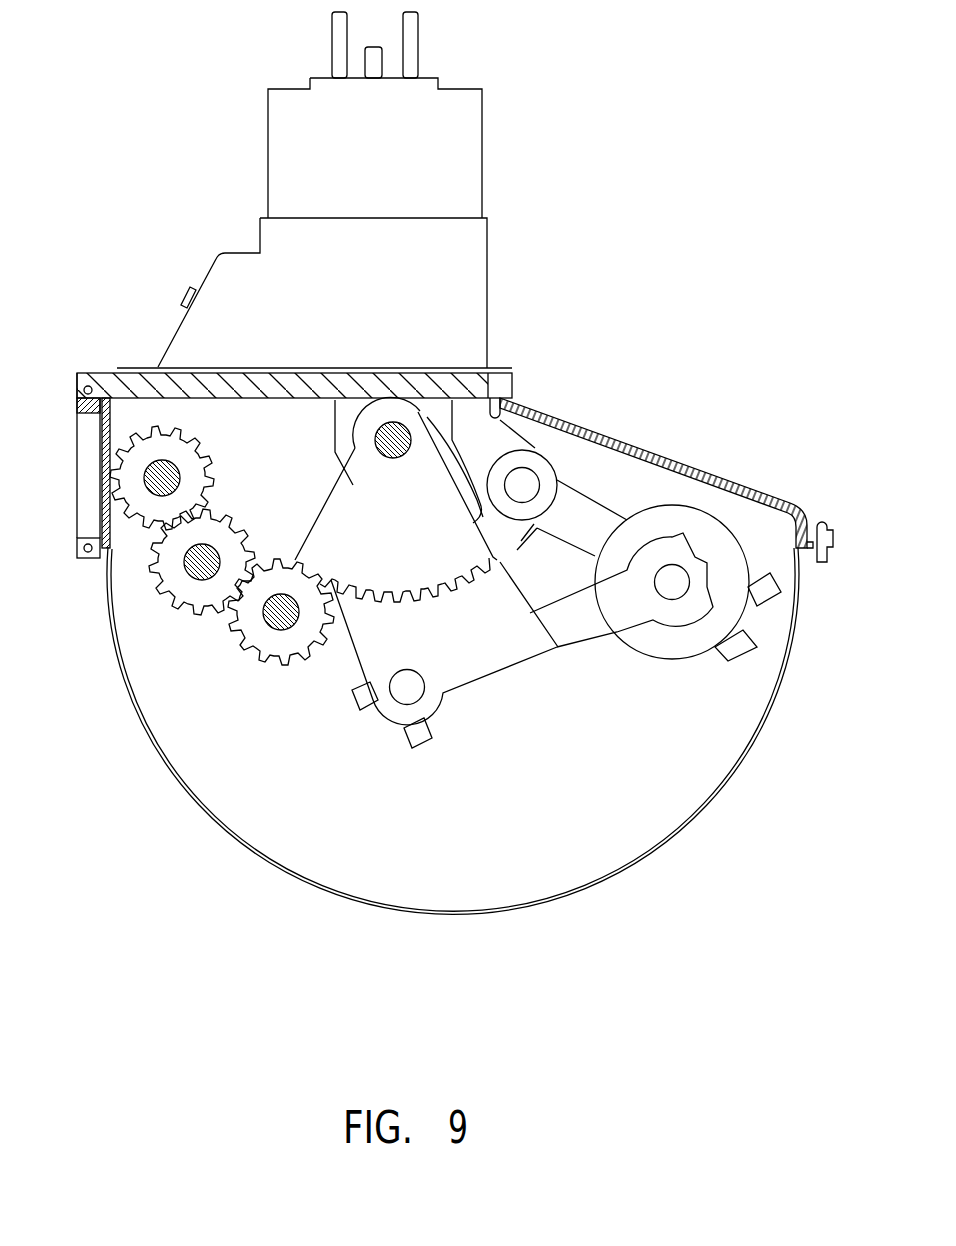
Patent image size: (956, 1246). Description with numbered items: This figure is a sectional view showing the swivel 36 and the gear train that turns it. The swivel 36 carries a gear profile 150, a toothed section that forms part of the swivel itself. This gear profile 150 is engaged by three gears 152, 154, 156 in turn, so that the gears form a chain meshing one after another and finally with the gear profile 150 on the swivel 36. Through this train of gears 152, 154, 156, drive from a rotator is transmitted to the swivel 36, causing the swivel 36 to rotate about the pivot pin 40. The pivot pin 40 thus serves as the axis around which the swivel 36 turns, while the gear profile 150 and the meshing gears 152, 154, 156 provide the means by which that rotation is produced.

The swivel 36 is at (497, 657).
The pivot pin 40 is at (400, 433).
The gear profile 150 is at (355, 598).
The gear 152 is at (248, 650).
The gear 154 is at (168, 588).
The gear 156 is at (137, 505).